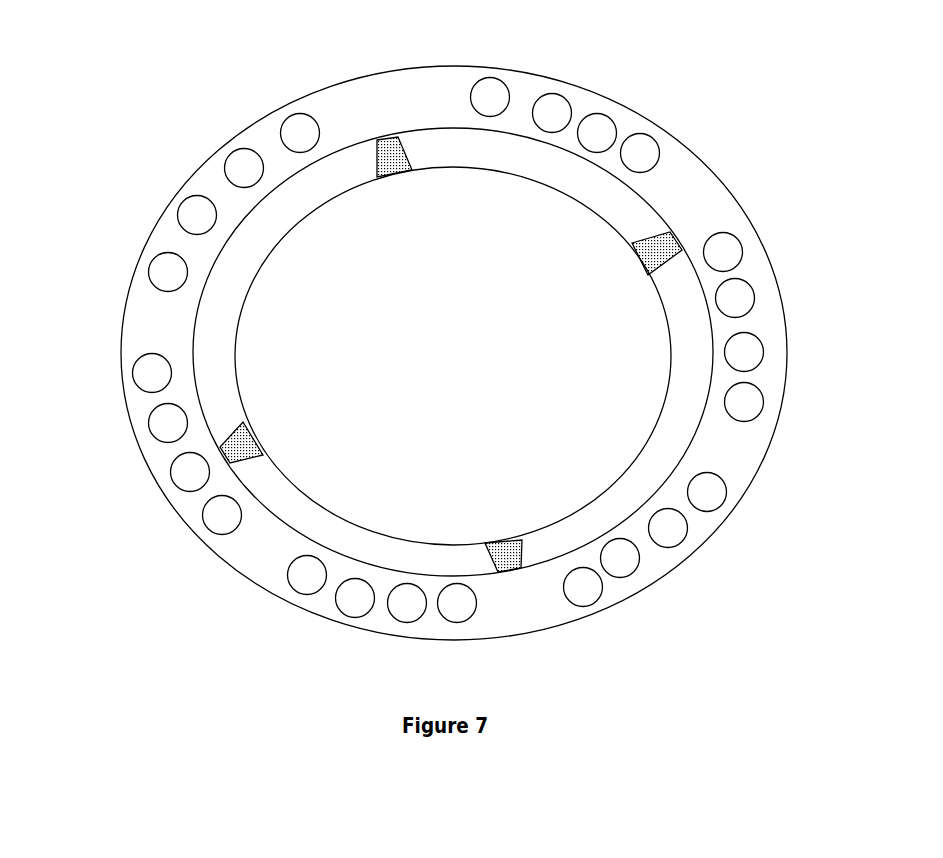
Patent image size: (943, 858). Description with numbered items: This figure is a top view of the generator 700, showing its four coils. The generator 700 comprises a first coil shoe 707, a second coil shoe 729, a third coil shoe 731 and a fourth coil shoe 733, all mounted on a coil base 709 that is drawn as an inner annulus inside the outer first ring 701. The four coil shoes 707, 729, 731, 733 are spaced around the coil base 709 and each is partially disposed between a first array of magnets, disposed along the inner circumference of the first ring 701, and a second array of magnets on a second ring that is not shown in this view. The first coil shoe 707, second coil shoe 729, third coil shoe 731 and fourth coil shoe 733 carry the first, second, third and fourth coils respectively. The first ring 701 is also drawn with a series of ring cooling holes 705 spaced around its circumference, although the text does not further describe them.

The generator 700 is at (218, 92).
The first ring 701 is at (752, 455).
The ring cooling hole 705 is at (146, 363).
The first coil shoe 707 is at (398, 172).
The coil base 709 is at (667, 392).
The second coil shoe 729 is at (247, 440).
The third coil shoe 731 is at (507, 545).
The fourth coil shoe 733 is at (641, 265).